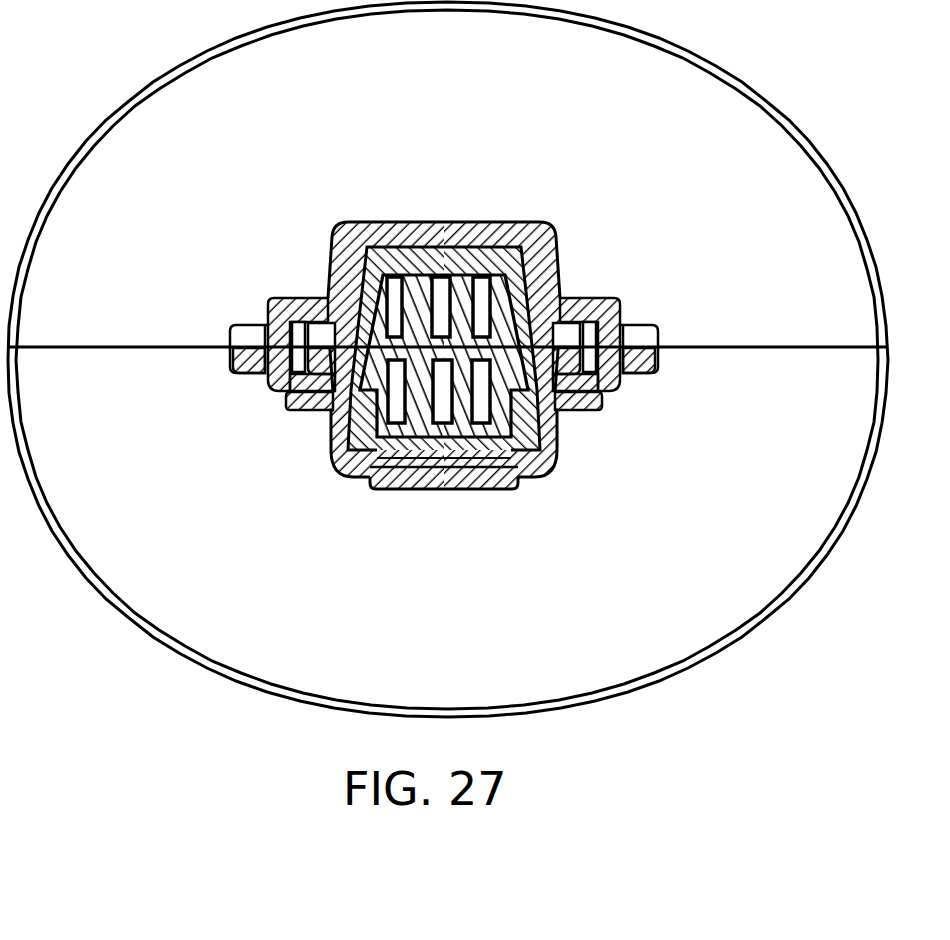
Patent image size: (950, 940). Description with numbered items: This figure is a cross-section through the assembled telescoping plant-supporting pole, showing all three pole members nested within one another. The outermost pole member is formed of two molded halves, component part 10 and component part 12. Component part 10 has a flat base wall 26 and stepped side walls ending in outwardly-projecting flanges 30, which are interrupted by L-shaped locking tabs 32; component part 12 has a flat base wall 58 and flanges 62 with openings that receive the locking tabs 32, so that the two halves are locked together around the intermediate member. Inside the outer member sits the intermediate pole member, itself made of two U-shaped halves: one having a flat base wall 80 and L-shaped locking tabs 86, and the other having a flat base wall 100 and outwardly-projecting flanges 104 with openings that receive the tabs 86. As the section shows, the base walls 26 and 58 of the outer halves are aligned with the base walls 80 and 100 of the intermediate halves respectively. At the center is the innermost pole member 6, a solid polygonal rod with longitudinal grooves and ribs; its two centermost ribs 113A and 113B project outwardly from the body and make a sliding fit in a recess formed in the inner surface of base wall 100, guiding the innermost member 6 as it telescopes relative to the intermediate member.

The component part 10 is at (399, 212).
The component part 12 is at (421, 500).
The flat base wall 26 is at (491, 224).
The flat base wall 80 is at (558, 243).
The innermost pole member 6 is at (546, 290).
The outwardly-projecting flanges 30 is at (659, 327).
The outwardly-projecting flanges 62 is at (652, 360).
The L-shaped locking tabs 32 is at (604, 391).
The L-shaped locking tabs 86 is at (600, 412).
The outwardly-projecting flanges 104 is at (289, 297).
The centermost rib 113A is at (558, 457).
The centermost rib 113B is at (331, 455).
The flat base wall 100 is at (462, 490).
The flat base wall 58 is at (378, 490).